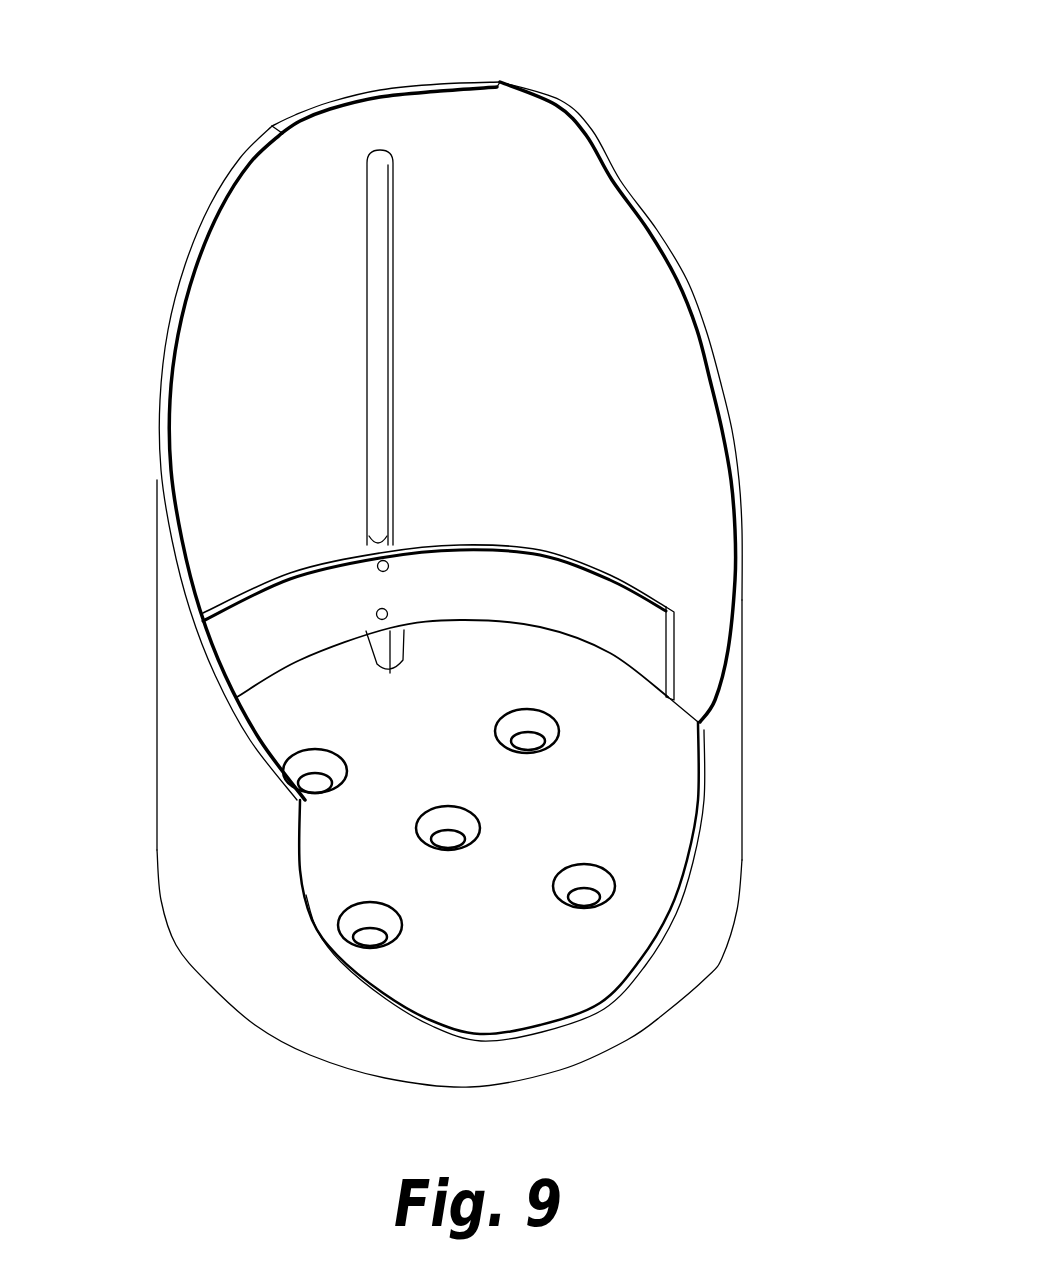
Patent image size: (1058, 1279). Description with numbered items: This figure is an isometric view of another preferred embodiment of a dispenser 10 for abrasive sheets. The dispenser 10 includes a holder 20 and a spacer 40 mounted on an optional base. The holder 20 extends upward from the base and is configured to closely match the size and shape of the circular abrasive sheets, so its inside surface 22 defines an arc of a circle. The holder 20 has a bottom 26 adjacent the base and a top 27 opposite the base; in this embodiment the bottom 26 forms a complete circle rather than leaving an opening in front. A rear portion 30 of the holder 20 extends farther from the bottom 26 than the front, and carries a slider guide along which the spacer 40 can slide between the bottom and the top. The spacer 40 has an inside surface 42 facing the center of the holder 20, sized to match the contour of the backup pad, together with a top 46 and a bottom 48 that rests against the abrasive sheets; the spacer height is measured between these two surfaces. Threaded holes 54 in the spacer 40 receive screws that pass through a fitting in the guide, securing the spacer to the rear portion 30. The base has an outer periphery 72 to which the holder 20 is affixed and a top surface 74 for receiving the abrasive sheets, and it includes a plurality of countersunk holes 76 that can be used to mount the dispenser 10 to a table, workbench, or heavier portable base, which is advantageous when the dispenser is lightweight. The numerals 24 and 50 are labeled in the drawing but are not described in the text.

The dispenser 10 is at (598, 84).
The holder 20 is at (672, 216).
The inside surface 22 is at (690, 371).
The cylindrical base wall 24 is at (727, 819).
The bottom 26 is at (707, 977).
The top 27 is at (393, 86).
The rear portion 30 is at (393, 207).
The spacer 40 is at (636, 566).
The inside surface 42 is at (566, 577).
The top 46 is at (493, 545).
The bottom 48 is at (466, 623).
The end of stop member 50 is at (673, 643).
The threaded holes 54 is at (388, 610).
The outer periphery 72 is at (560, 978).
The top surface 74 is at (450, 1000).
The countersunk hole 76 is at (428, 820).